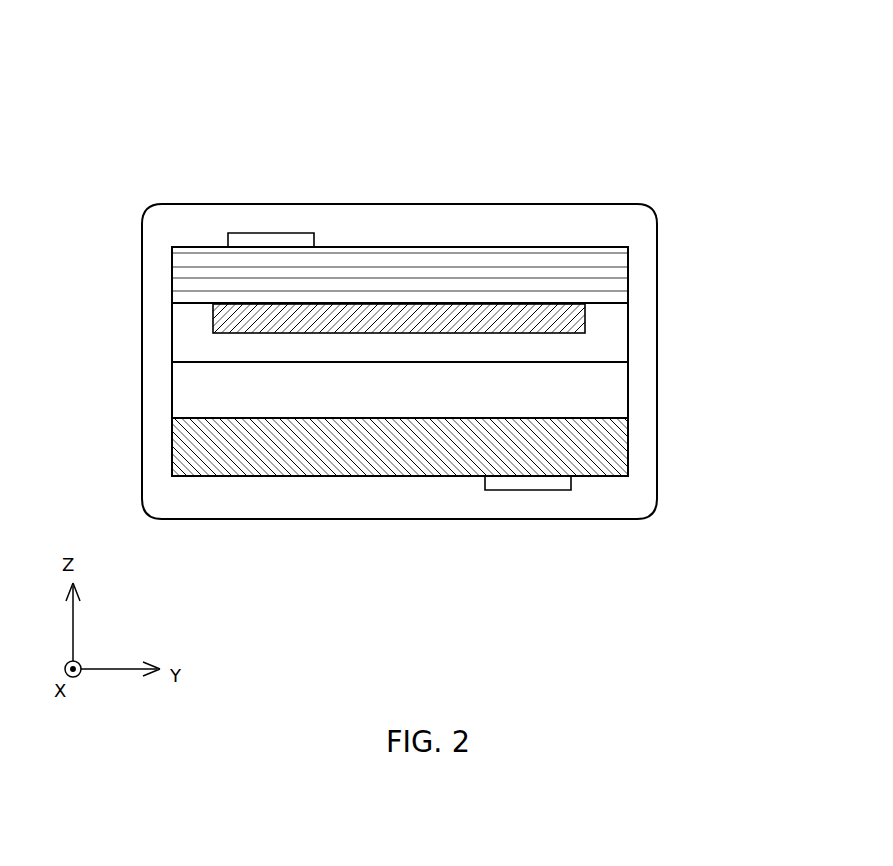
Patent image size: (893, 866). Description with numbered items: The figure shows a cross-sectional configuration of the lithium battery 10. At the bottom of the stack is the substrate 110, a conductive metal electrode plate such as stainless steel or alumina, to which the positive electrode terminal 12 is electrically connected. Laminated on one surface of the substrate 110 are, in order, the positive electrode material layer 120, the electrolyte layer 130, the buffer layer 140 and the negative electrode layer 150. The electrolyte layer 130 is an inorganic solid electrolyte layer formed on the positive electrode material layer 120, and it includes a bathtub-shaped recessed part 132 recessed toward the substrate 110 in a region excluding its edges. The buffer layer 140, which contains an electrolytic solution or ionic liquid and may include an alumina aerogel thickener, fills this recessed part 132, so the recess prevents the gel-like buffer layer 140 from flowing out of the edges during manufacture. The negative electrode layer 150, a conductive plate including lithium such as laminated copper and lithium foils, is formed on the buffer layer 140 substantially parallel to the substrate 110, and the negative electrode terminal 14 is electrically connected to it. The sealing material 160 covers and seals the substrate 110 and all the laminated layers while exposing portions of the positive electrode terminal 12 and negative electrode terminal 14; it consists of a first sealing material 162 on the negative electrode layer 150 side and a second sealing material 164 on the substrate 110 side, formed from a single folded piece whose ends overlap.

The lithium battery 10 is at (497, 91).
The positive electrode terminal 12 is at (528, 490).
The negative electrode terminal 14 is at (271, 233).
The substrate 110 is at (617, 450).
The positive electrode material layer 120 is at (617, 391).
The electrolyte layer 130 is at (617, 348).
The recessed part 132 is at (585, 318).
The buffer layer 140 is at (520, 318).
The negative electrode layer 150 is at (617, 277).
The sealing material 160 is at (152, 351).
The first sealing material 162 is at (422, 218).
The second sealing material 164 is at (340, 507).